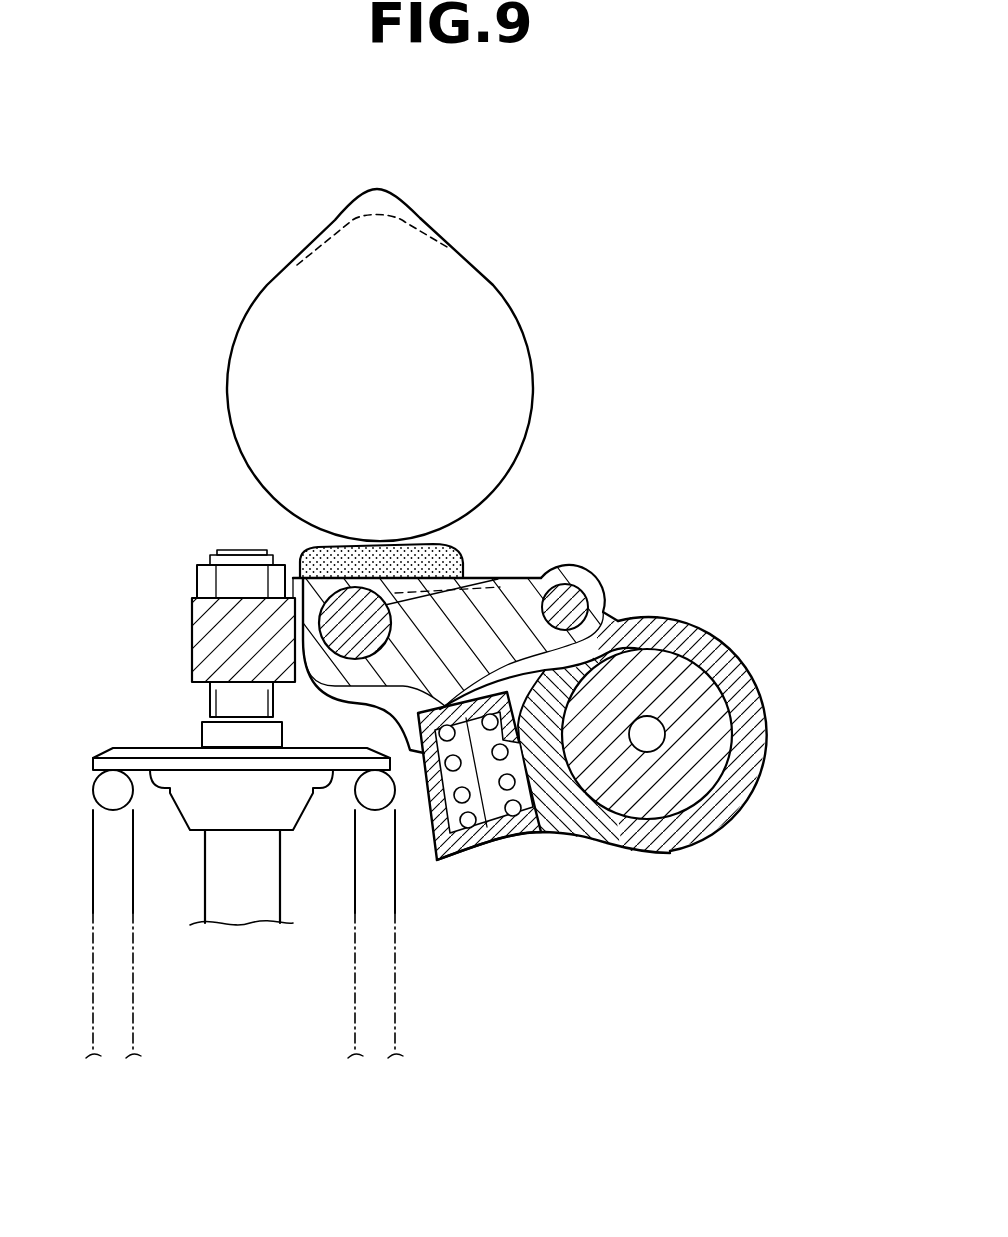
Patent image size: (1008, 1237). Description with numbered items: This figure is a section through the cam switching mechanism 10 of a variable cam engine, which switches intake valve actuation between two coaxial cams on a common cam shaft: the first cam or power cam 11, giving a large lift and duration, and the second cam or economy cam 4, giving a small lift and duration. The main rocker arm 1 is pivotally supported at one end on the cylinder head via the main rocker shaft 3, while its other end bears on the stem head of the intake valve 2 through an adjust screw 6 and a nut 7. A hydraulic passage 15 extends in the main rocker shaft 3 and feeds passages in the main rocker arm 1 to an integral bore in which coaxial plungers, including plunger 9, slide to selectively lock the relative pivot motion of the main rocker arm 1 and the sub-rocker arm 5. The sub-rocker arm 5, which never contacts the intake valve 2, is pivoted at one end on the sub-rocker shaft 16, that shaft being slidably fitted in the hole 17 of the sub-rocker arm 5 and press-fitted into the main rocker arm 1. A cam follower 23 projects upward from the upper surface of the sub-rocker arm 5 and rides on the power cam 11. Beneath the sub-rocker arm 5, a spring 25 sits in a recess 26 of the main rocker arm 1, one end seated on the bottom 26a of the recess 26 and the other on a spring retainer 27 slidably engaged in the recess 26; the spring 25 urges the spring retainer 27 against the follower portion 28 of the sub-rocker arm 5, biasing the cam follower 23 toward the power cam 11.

The main rocker arm 1 is at (178, 641).
The intake valve 2 is at (243, 893).
The main rocker shaft 3 is at (650, 838).
The second cam (economy cam) 4 is at (338, 222).
The sub-rocker arm 5 is at (295, 550).
The adjust screw 6 is at (225, 697).
The nut 7 is at (205, 580).
The plunger 9 is at (477, 578).
The cam switching mechanism 10 is at (572, 525).
The first cam (power cam) 11 is at (420, 217).
The hydraulic passage 15 is at (657, 735).
The sub-rocker shaft 16 is at (535, 586).
The hole 17 is at (587, 567).
The cam follower 23 is at (433, 544).
The spring 25 is at (547, 828).
The recess 26 is at (425, 852).
The bottom of recess 26a is at (494, 833).
The spring retainer 27 is at (662, 618).
The follower portion 28 is at (495, 825).